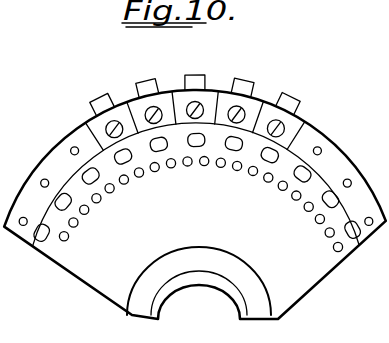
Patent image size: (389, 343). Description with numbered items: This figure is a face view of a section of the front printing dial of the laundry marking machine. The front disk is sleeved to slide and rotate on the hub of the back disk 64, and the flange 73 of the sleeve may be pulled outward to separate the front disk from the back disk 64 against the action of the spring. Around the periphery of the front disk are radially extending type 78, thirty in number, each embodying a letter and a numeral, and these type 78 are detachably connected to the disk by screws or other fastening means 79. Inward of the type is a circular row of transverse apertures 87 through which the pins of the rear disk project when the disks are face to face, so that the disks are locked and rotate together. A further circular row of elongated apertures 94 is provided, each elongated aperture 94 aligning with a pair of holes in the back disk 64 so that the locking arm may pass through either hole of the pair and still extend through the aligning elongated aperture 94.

The back disk 64 is at (322, 279).
The flange 73 is at (198, 249).
The type 78 is at (110, 108).
The screws 79 is at (105, 129).
The transverse apertures 87 is at (100, 202).
The elongated aperture 94 is at (207, 146).